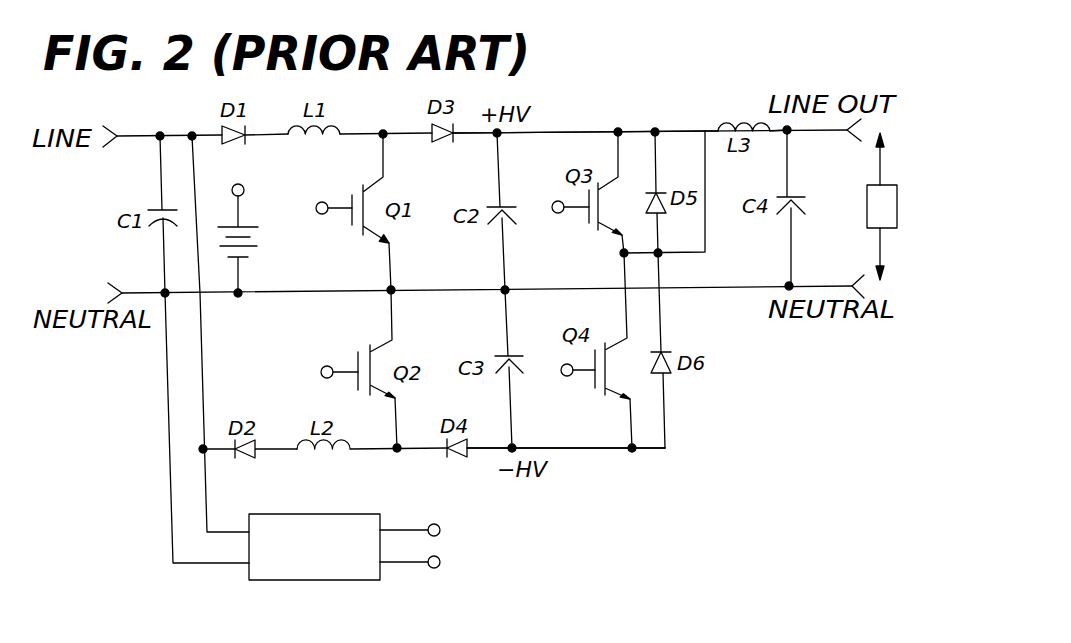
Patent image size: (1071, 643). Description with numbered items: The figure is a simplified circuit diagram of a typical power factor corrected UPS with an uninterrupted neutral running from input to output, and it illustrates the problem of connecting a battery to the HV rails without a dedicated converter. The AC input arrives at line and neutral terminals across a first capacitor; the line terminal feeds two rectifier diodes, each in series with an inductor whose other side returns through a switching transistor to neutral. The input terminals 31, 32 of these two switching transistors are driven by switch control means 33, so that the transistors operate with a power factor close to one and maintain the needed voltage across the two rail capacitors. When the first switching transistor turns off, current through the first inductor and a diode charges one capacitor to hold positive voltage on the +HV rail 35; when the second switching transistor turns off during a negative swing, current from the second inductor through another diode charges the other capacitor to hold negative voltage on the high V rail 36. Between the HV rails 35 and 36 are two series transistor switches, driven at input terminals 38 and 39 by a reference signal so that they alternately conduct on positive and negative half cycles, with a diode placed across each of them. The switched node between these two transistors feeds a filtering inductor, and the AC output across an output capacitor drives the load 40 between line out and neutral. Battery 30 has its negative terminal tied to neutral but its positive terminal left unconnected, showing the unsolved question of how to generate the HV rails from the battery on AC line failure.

The battery 30 is at (258, 243).
The input terminal 31 is at (316, 208).
The input terminal 32 is at (321, 372).
The switch control means 33 is at (327, 580).
The +HV rail 35 is at (548, 132).
The high V rail 36 is at (603, 449).
The input terminal 38 is at (556, 213).
The input terminal 39 is at (565, 376).
The load 40 is at (867, 190).